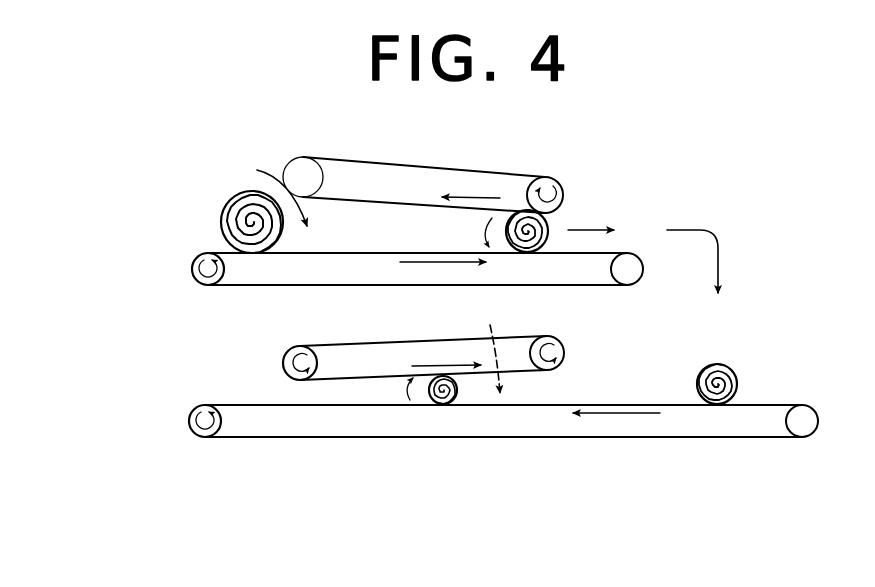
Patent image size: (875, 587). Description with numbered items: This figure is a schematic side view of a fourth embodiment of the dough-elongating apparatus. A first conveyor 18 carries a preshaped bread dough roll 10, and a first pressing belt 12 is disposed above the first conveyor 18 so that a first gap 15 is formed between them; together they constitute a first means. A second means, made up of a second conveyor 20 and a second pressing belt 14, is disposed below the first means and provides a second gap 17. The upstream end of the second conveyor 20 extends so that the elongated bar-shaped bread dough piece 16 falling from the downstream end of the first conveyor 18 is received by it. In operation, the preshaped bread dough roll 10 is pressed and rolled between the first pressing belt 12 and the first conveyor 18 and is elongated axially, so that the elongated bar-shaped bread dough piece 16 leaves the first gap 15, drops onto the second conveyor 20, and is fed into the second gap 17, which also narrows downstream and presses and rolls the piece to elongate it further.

The preshaped bread dough roll 10 is at (222, 213).
The first pressing belt 12 is at (478, 168).
The second pressing belt 14 is at (563, 340).
The first gap 15 is at (270, 182).
The elongated bar-shaped bread dough piece 16 is at (545, 217).
The second gap 17 is at (492, 344).
The first conveyor 18 is at (290, 285).
The second conveyor 20 is at (252, 437).